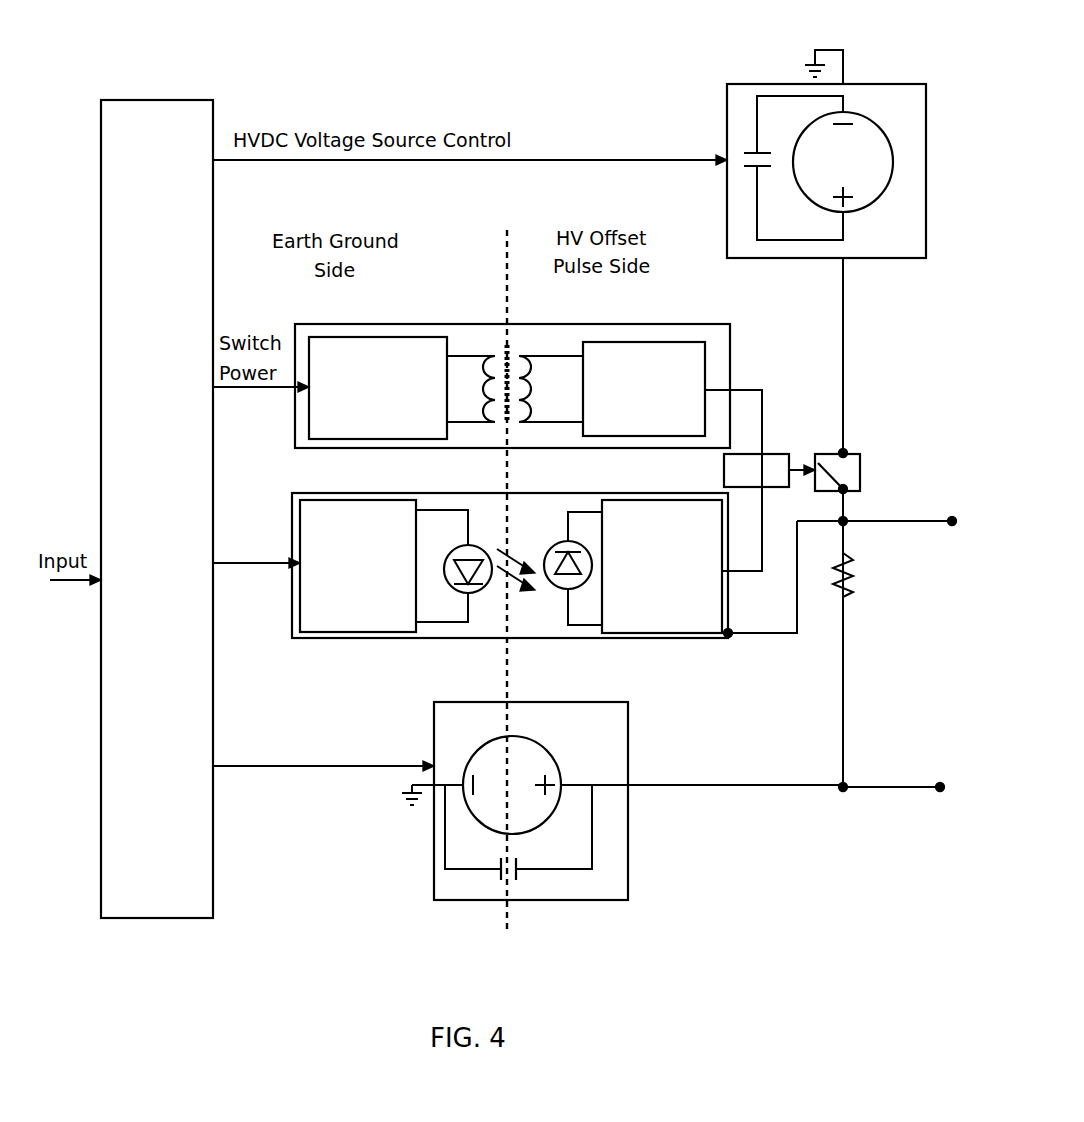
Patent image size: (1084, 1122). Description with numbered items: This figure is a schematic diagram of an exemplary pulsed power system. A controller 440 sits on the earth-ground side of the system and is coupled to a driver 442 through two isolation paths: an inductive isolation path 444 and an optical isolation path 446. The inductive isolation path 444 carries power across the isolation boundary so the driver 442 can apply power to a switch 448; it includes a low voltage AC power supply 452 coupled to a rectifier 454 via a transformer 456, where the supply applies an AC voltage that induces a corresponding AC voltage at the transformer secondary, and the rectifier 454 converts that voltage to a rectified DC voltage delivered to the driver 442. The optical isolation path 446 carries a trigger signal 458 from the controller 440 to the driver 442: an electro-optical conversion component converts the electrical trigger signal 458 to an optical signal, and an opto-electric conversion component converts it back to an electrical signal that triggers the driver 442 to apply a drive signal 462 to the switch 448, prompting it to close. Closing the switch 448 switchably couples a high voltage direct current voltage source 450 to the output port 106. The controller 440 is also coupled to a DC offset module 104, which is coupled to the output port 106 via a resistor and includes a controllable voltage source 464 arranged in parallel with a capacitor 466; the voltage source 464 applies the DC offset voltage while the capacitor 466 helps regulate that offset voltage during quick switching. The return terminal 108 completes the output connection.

The controller 440 is at (148, 100).
The high voltage direct current (HVDC) voltage source 450 is at (901, 84).
The inductive isolation path 444 is at (538, 324).
The low voltage AC power supply 452 is at (416, 337).
The transformer 456 is at (484, 332).
The rectifier 454 is at (650, 342).
The driver 442 is at (762, 454).
The drive signal 462 is at (796, 471).
The switch 448 is at (848, 453).
The output port 106 is at (951, 519).
The optical isolation path 446 is at (524, 496).
The trigger signal 458 is at (246, 562).
The DC offset module 104 is at (628, 827).
The controllable voltage source 464 is at (527, 736).
The capacitor 466 is at (517, 880).
The return terminal 108 is at (940, 786).